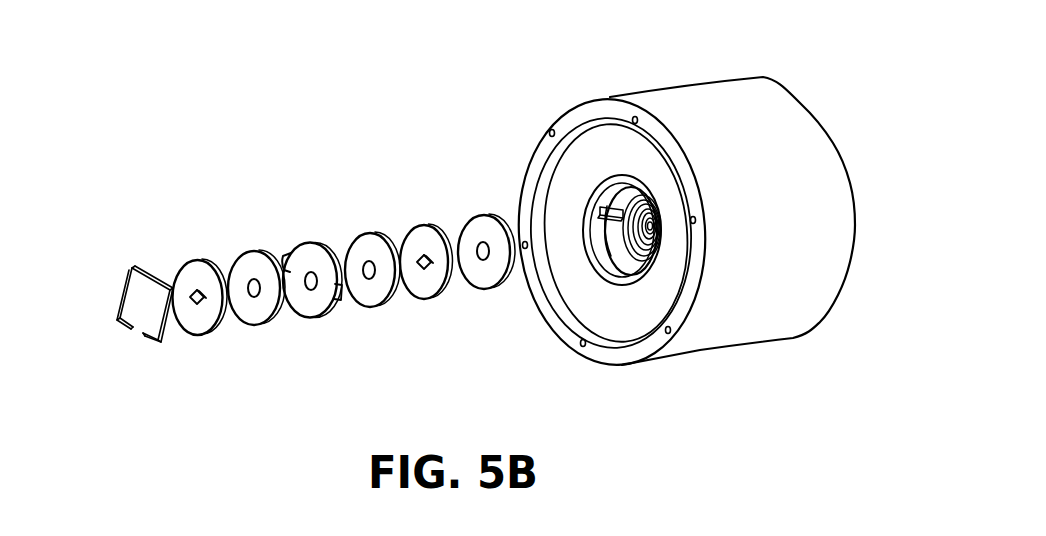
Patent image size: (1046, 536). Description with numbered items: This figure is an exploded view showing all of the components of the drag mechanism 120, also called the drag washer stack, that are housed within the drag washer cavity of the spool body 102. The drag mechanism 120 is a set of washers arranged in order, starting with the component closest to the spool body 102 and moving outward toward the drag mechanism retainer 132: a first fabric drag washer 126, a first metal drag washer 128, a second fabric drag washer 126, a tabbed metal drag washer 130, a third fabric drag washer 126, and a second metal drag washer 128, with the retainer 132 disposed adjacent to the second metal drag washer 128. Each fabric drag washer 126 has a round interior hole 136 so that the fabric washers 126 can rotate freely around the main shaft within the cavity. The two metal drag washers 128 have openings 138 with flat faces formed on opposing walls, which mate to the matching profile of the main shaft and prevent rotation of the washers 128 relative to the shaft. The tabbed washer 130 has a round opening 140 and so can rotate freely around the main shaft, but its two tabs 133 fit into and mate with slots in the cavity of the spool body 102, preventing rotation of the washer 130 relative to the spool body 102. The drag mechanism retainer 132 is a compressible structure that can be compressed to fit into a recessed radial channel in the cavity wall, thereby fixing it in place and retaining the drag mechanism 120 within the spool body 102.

The spool body 102 is at (499, 176).
The drag mechanism 120 is at (203, 83).
The fabric drag washer 126 is at (255, 252).
The metal drag washer 128 is at (205, 337).
The tabbed drag washer 130 is at (293, 303).
The drag mechanism retainer 132 is at (120, 318).
The tab 133 is at (287, 260).
The round interior hole 136 is at (240, 282).
The opening 138 is at (184, 287).
The round opening 140 is at (327, 297).